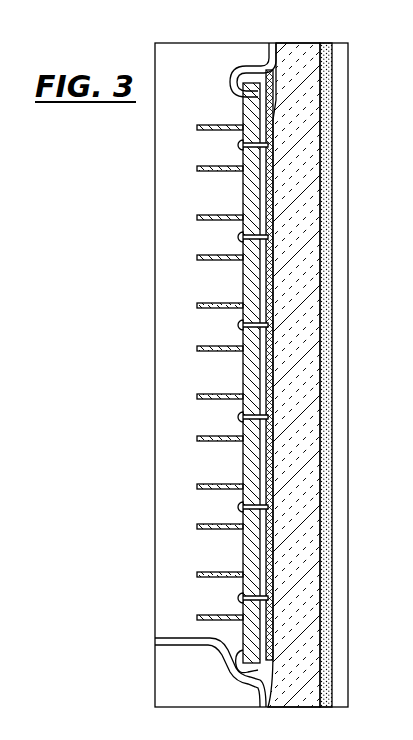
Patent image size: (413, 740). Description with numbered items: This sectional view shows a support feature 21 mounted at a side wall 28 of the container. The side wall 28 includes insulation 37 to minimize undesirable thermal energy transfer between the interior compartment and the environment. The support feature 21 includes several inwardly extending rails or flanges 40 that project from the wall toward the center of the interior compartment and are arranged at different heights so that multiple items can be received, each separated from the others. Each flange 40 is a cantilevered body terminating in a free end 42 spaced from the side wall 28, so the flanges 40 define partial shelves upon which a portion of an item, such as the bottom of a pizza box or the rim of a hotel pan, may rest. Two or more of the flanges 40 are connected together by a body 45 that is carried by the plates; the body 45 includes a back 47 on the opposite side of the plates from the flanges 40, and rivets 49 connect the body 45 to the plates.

The support feature 21 is at (224, 90).
The side wall 28 is at (333, 40).
The insulation 37 is at (312, 385).
The flange 40 is at (210, 167).
The free end 42 is at (197, 218).
The body 45 is at (226, 226).
The back 47 is at (262, 180).
The rivet 49 is at (240, 416).